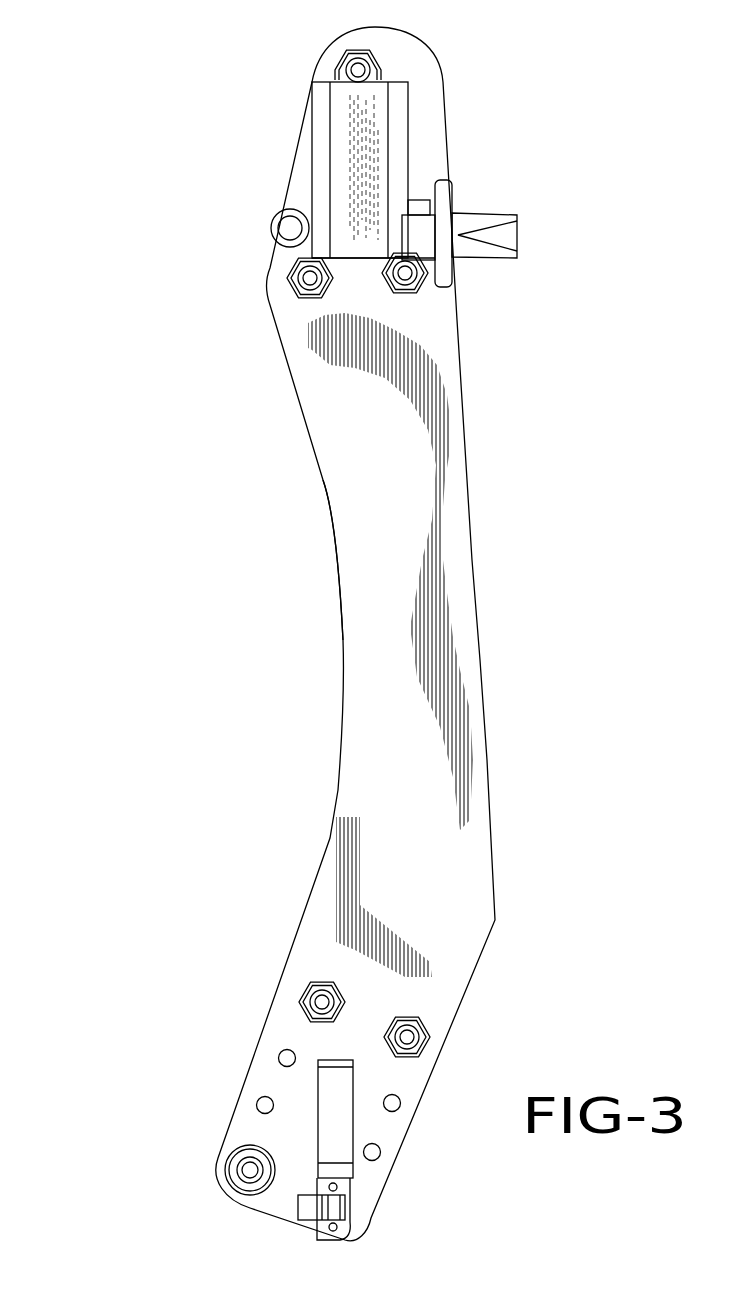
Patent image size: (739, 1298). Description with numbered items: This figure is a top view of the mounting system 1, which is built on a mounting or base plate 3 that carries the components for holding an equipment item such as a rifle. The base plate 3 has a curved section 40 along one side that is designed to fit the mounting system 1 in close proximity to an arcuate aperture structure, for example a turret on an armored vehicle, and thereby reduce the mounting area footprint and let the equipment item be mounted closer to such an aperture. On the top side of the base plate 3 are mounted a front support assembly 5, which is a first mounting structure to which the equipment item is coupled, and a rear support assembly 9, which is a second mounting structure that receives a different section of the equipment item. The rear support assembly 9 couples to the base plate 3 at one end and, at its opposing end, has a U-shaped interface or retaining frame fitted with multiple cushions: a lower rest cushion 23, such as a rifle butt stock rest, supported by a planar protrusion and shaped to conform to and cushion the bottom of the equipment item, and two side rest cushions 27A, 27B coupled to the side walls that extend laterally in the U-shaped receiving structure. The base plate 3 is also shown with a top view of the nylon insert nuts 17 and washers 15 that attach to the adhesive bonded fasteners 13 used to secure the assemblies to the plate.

The mounting system 1 is at (117, 90).
The base plate 3 is at (440, 563).
The front support assembly 5 is at (318, 1095).
The rear support assembly 9 is at (405, 171).
The adhesive bonded fasteners 13 is at (341, 615).
The washers 15 is at (341, 615).
The nylon insert nuts 17 is at (343, 58).
The lower rest cushion 23 is at (383, 90).
The side rest cushion 27A is at (328, 212).
The side rest cushion 27B is at (377, 235).
The curved section 40 is at (340, 633).